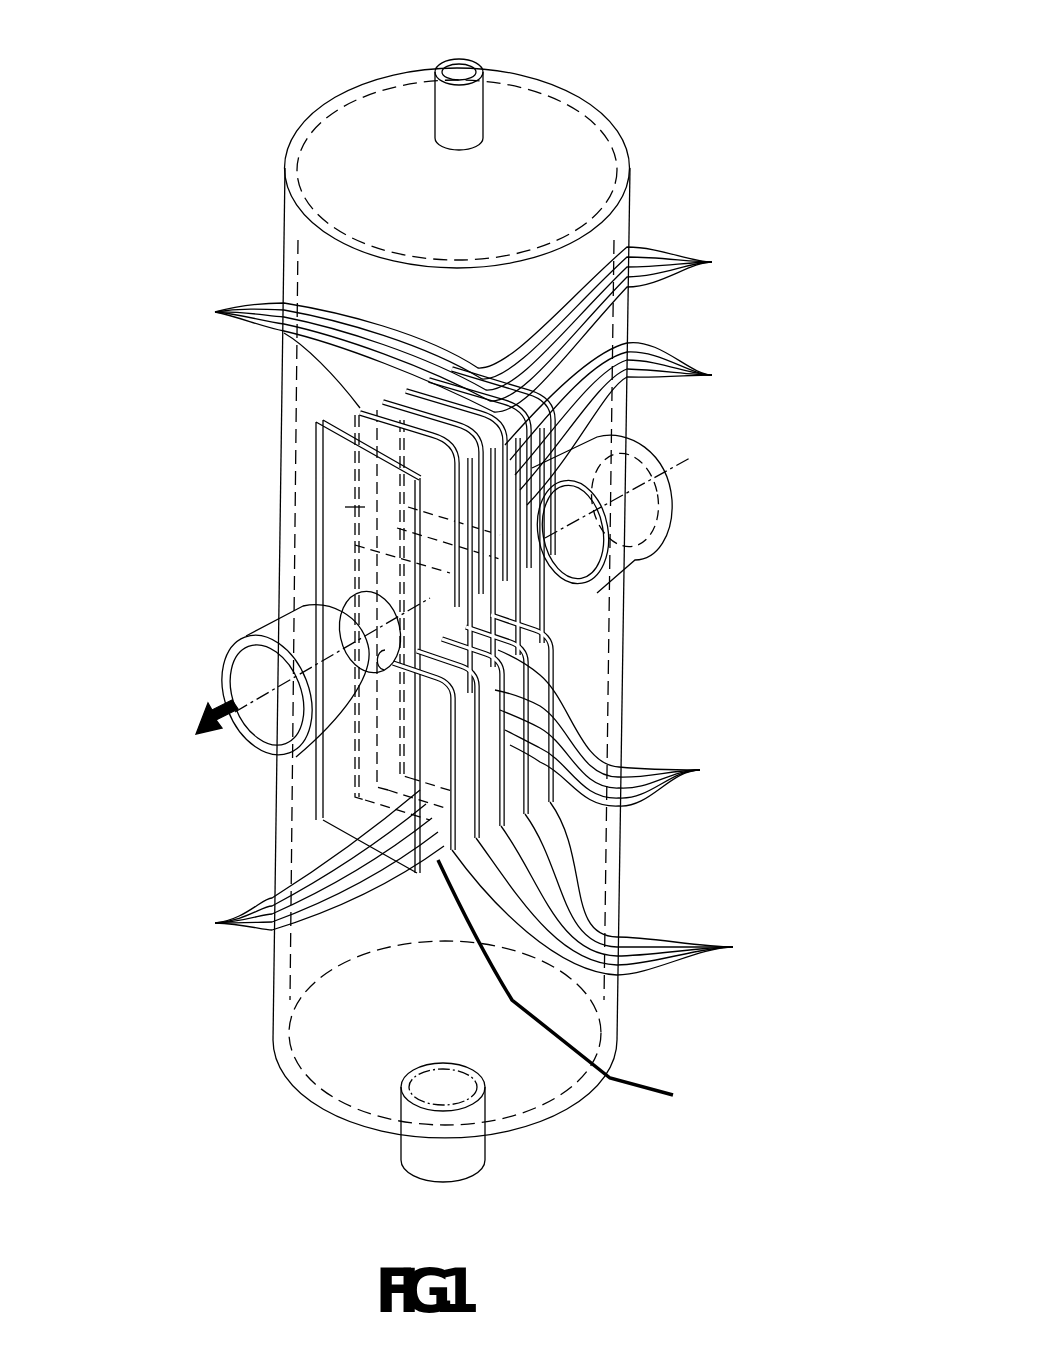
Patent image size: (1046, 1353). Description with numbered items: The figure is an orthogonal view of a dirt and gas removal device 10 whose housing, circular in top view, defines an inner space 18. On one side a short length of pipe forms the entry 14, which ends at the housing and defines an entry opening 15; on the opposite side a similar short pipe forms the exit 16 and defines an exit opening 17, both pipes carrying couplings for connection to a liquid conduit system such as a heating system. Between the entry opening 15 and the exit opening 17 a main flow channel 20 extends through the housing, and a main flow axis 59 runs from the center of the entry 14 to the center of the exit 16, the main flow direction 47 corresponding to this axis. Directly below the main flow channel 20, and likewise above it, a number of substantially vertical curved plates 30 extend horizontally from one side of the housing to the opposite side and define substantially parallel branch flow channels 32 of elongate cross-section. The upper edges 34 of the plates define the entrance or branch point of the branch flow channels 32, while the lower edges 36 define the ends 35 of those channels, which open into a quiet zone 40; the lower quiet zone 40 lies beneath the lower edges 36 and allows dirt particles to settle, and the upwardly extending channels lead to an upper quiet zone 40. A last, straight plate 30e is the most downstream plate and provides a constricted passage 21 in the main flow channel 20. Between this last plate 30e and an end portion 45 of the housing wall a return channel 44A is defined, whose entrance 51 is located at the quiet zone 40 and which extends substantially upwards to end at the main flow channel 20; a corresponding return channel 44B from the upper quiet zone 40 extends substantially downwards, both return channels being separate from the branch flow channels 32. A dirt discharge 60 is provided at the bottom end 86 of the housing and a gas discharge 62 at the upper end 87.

The dirt and gas removal device 10 is at (665, 116).
The entry 14 is at (672, 525).
The entry opening 15 is at (605, 562).
The exit 16 is at (255, 738).
The exit opening 17 is at (288, 787).
The inner space 18 is at (390, 324).
The main flow channel 20 is at (384, 594).
The constricted passage 21 is at (350, 596).
The plates 30 is at (215, 312).
The last plate 30e is at (345, 507).
The branch flow channels 32 is at (712, 375).
The upper edges 34 is at (607, 560).
The ends of the branch flow channels 35 is at (573, 984).
The lower edges 36 is at (712, 262).
The quiet zone 40 is at (467, 221).
The return channel 44A is at (305, 805).
The return channel 44B is at (305, 567).
The end portion of the wall 45 is at (290, 463).
The main flow direction 47 is at (216, 706).
The entrance of the return channel 51 is at (300, 427).
The main flow axis 59 is at (688, 470).
The dirt discharge 60 is at (480, 1170).
The gas discharge 62 is at (443, 60).
The bottom end 86 is at (318, 1108).
The upper end 87 is at (330, 98).